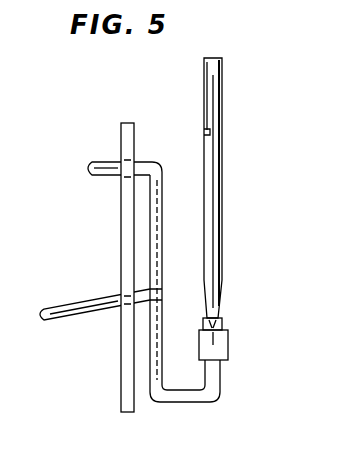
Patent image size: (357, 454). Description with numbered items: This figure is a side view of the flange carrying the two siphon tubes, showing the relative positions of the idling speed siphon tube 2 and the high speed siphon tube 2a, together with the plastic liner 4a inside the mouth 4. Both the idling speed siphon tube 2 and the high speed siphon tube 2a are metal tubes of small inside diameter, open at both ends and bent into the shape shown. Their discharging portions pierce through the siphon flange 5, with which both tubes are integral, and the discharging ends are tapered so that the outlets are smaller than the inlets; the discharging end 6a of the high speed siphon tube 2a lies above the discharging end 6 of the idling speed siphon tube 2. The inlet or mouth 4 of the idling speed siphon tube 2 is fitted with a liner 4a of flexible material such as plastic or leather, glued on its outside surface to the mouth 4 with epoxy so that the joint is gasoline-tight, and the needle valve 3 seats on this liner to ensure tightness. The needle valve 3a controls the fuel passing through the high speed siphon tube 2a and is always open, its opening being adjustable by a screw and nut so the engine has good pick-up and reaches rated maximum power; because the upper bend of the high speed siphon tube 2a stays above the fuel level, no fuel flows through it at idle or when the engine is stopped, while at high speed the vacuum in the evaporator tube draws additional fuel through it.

The idling speed siphon tube 2 is at (153, 303).
The high speed siphon tube 2a is at (161, 187).
The needle valve 3 is at (220, 185).
The needle valve 3a is at (222, 97).
The mouth 4 is at (222, 350).
The liner 4a is at (222, 326).
The siphon flange 5 is at (122, 135).
The discharging end 6 is at (73, 309).
The discharging end 6a is at (115, 169).